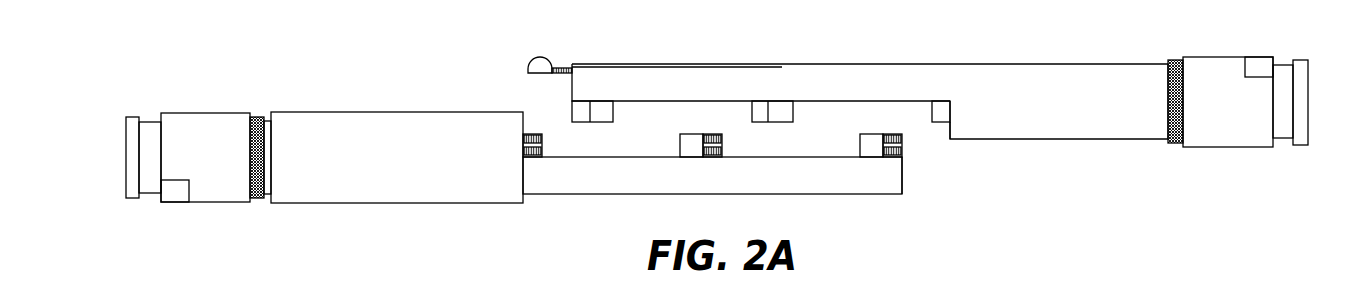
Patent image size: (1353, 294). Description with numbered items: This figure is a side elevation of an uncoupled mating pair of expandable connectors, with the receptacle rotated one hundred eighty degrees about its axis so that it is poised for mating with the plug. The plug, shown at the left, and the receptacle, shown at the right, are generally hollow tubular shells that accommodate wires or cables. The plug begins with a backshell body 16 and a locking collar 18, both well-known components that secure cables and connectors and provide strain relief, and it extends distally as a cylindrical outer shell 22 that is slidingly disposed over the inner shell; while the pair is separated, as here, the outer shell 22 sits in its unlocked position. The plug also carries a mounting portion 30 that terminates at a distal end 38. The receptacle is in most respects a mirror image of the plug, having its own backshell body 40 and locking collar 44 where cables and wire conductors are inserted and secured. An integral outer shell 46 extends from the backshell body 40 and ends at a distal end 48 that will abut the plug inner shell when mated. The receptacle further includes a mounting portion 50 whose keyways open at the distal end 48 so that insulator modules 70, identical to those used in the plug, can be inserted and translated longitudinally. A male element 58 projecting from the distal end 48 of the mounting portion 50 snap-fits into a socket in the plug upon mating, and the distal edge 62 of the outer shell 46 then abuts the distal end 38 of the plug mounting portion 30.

The backshell body 16 is at (190, 113).
The locking collar 18 is at (131, 117).
The cylindrical outer shell 22 is at (320, 112).
The mounting portion 30 is at (613, 194).
The distal end 38 is at (902, 165).
The backshell body 40 is at (1190, 57).
The locking collar 44 is at (1302, 60).
The integral outer shell 46 is at (1045, 72).
The distal end 48 is at (572, 80).
The mounting portion 50 is at (832, 72).
The male element 58 is at (540, 57).
The distal edge 62 is at (950, 130).
The insulator modules 70 is at (533, 134).